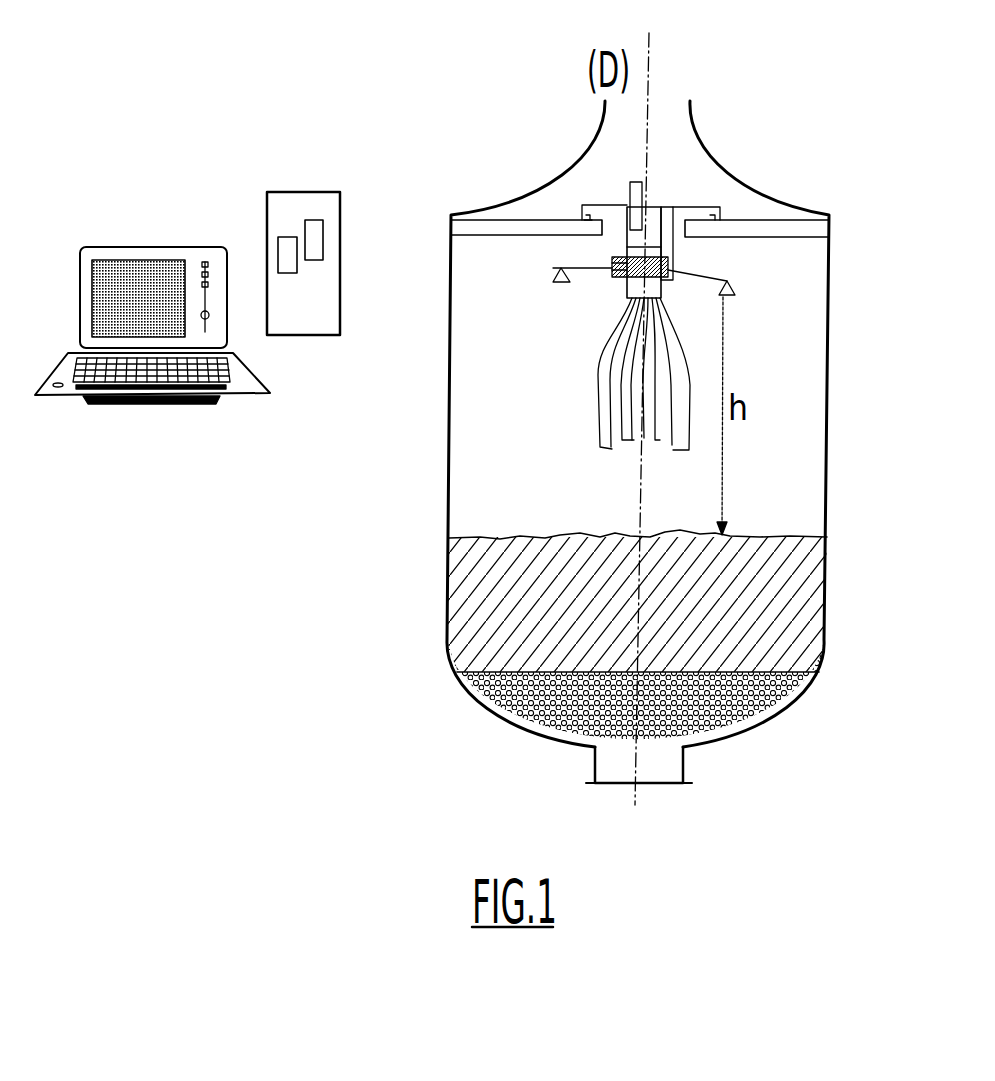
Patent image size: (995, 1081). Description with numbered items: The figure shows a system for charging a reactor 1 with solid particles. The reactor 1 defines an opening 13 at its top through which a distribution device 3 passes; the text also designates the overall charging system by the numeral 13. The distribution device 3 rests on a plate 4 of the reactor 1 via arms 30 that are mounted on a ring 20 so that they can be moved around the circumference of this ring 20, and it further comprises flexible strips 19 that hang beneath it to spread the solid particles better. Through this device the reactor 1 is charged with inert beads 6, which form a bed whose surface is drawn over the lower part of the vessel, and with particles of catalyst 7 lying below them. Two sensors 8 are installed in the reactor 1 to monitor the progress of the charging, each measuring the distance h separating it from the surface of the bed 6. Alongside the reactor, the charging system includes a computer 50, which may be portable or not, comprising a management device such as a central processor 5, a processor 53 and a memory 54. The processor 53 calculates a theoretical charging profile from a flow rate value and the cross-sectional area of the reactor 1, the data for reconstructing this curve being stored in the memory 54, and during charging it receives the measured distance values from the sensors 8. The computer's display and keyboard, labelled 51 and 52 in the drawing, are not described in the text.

The reactor 1 is at (831, 199).
The distribution device 3 is at (652, 202).
The plate 4 is at (790, 232).
The central processor 5 is at (331, 242).
The inert beads 6 is at (767, 618).
The particles of catalyst 7 is at (763, 707).
The sensors 8 is at (735, 288).
The opening 13 is at (673, 85).
The flexible strips 19 is at (657, 408).
The ring 20 is at (628, 277).
The arms 30 is at (690, 208).
The computer 50 is at (285, 174).
The computer 51 is at (173, 247).
The keyboard 52 is at (247, 384).
The processor 53 is at (323, 243).
The memory 54 is at (290, 273).